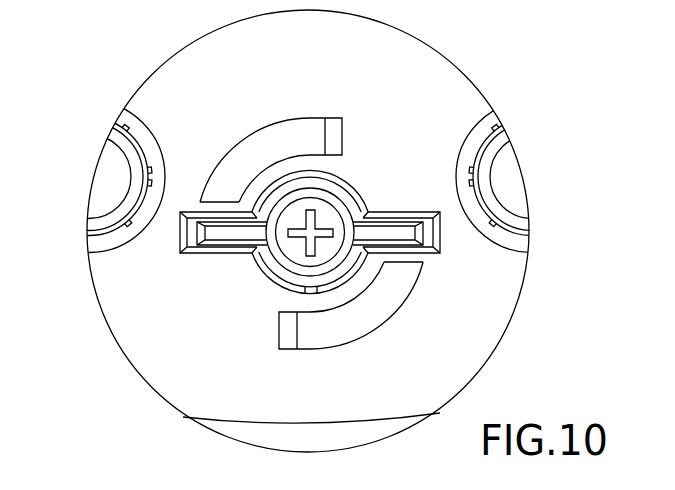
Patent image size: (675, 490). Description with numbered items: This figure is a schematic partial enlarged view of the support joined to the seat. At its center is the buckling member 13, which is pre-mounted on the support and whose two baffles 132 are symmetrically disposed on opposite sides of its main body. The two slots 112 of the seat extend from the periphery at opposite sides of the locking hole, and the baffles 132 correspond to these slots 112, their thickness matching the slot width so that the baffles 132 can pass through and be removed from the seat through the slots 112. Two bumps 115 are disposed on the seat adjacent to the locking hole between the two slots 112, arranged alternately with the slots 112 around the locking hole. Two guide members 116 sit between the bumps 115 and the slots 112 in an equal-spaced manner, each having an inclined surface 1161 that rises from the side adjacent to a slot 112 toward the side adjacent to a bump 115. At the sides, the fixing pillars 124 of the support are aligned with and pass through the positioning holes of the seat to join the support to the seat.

The buckling member 13 is at (271, 271).
The slots 112 is at (190, 247).
The bumps 115 is at (338, 134).
The guide members 116 is at (239, 143).
The inclined surface 1161 is at (277, 133).
The fixing pillars 124 is at (108, 179).
The baffles 132 is at (232, 237).